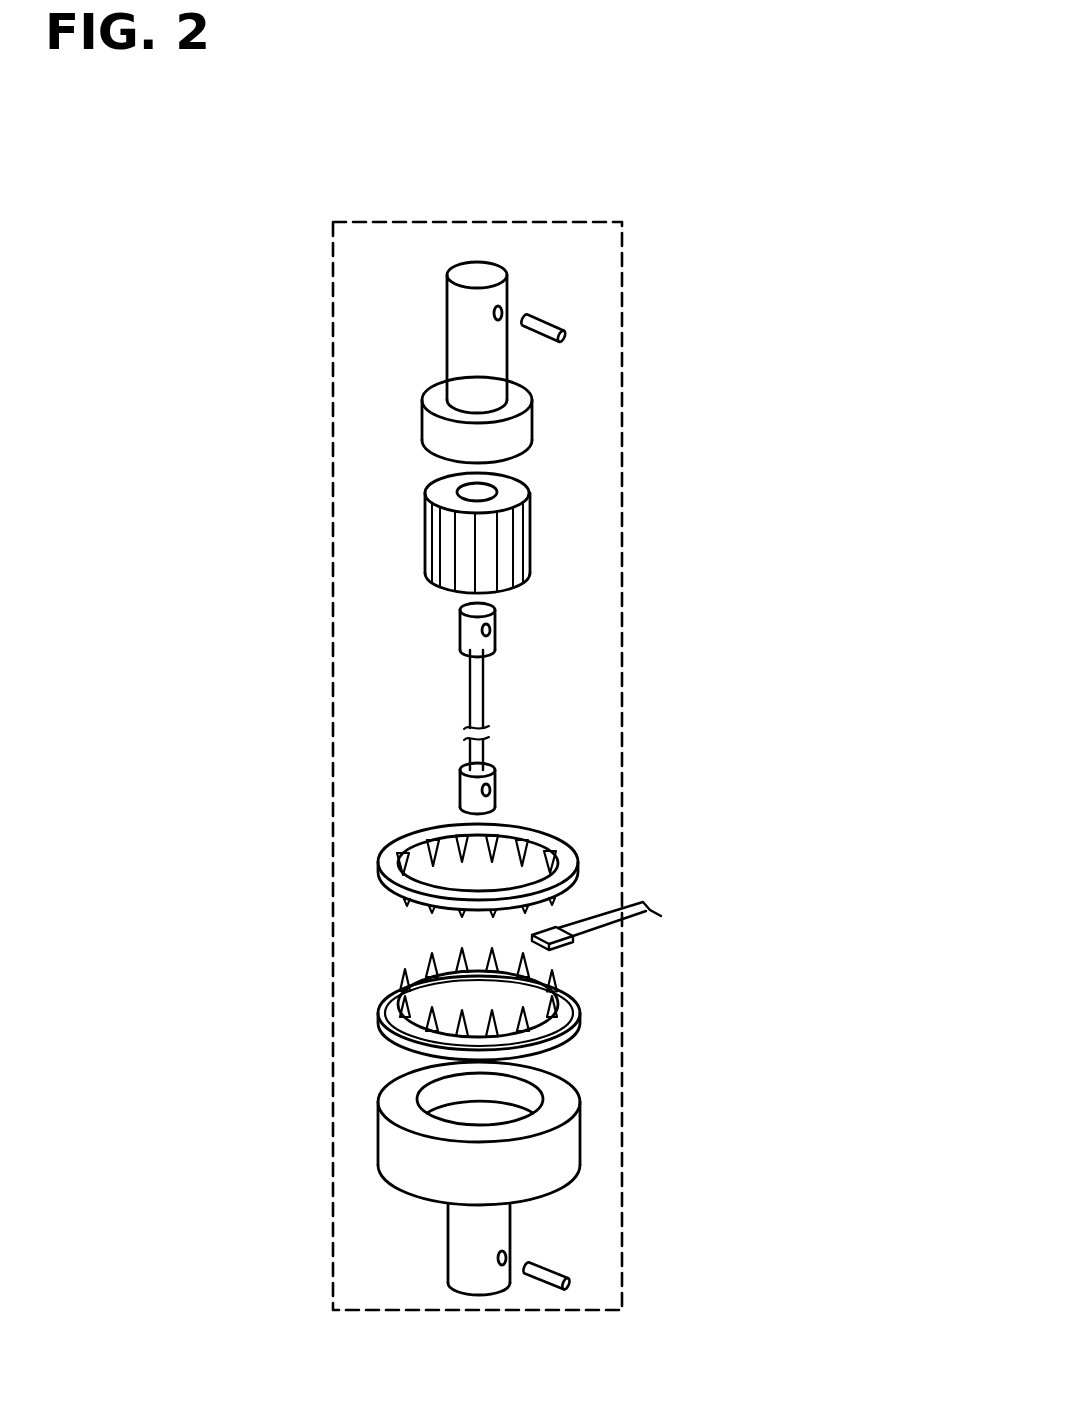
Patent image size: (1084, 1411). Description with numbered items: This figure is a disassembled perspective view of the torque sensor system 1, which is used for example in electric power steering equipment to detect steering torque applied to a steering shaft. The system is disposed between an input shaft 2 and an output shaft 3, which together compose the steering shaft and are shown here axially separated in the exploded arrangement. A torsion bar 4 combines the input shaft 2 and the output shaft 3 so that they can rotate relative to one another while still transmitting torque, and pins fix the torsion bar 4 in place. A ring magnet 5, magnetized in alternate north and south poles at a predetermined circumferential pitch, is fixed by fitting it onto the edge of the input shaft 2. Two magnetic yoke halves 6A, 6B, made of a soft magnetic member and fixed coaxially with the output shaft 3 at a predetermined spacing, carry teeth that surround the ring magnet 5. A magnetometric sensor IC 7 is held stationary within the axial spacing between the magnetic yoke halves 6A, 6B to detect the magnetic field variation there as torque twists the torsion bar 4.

The flow sensor / assembly 1 is at (333, 313).
The input shaft 2 is at (487, 272).
The output shaft 3 is at (570, 1148).
The torsion bar 4 is at (480, 687).
The ring magnet 5 is at (520, 523).
The magnetic yoke half 6A is at (568, 858).
The magnetic yoke half 6B is at (573, 1007).
The magnetometric sensor IC 7 is at (567, 944).